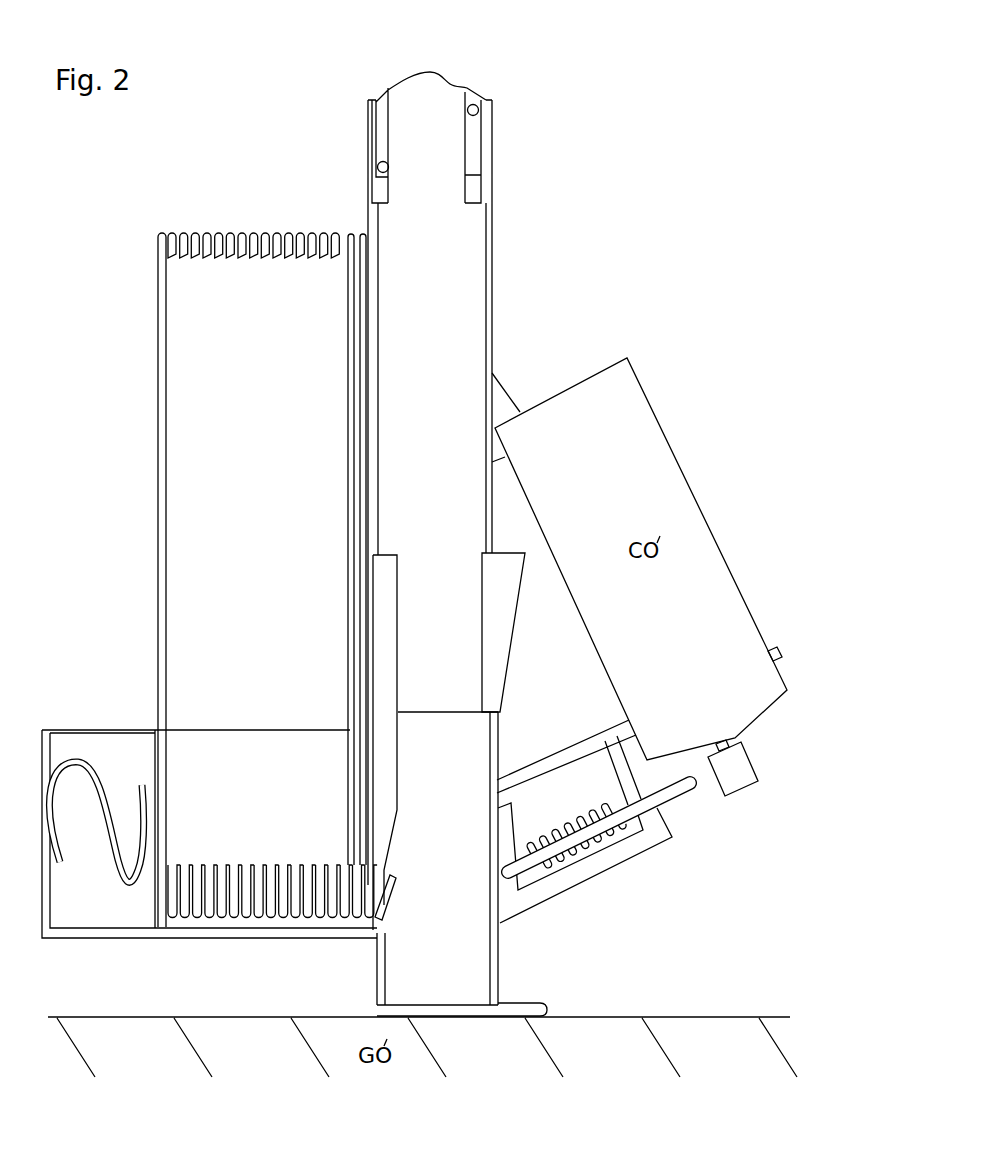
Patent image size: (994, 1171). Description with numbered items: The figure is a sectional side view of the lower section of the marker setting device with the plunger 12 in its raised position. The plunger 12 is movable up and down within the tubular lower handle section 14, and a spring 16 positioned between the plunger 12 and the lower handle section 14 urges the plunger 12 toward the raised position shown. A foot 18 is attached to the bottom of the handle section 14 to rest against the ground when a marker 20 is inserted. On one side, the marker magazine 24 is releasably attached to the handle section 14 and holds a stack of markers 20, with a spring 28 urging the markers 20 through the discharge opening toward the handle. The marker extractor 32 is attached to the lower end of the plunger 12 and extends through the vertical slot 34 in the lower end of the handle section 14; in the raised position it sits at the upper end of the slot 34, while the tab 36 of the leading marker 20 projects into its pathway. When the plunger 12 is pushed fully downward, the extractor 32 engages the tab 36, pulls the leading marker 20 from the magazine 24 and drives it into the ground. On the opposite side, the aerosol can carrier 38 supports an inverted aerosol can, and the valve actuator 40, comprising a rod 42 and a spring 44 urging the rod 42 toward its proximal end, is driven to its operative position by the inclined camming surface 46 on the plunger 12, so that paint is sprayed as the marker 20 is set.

The plunger 12 is at (397, 228).
The lower handle section 14 is at (490, 268).
The spring 16 is at (474, 110).
The foot 18 is at (540, 997).
The marker 20 is at (356, 600).
The marker magazine 24 is at (145, 721).
The spring 28 is at (80, 766).
The marker extractor 32 is at (388, 600).
The vertical slot 34 is at (383, 963).
The extractor projection or tab 36 is at (390, 887).
The aerosol can carrier 38 is at (773, 650).
The valve actuator 40 is at (607, 825).
The rod 42 is at (675, 790).
The spring 44 is at (557, 863).
The inclined camming surface 46 is at (500, 613).